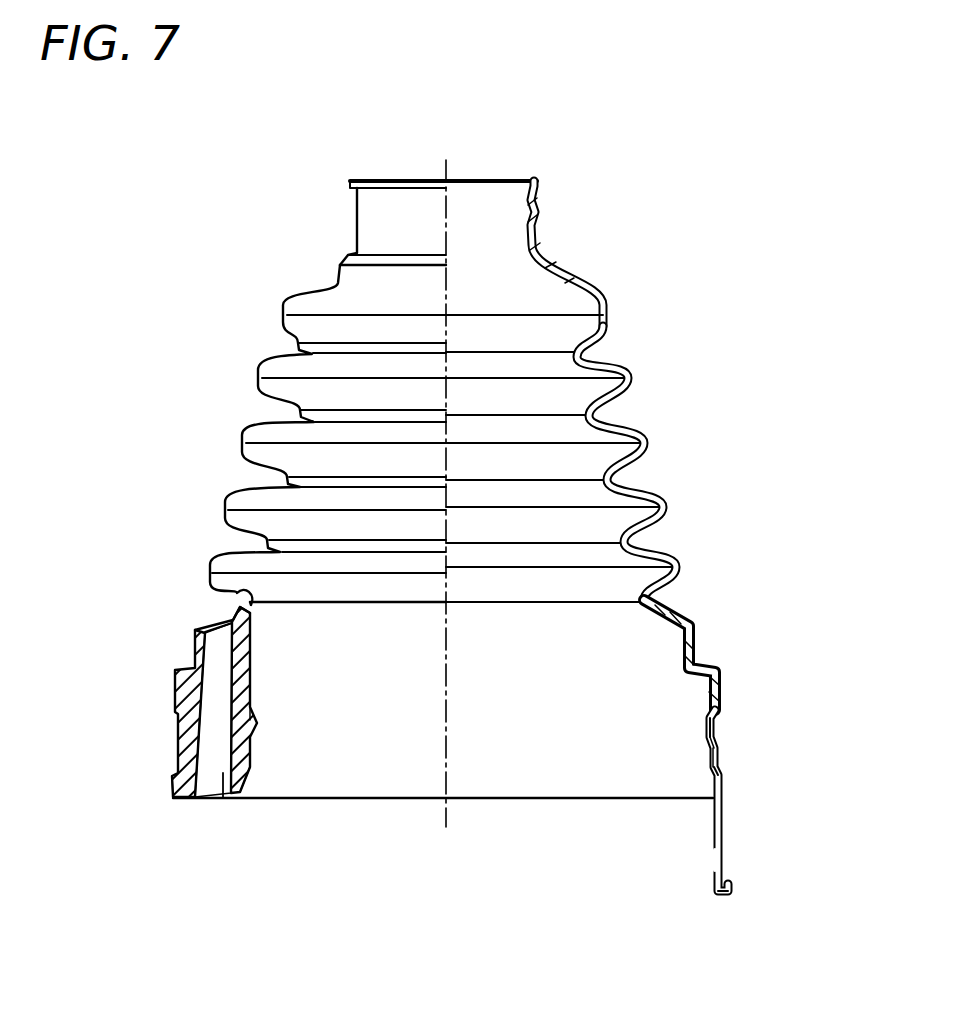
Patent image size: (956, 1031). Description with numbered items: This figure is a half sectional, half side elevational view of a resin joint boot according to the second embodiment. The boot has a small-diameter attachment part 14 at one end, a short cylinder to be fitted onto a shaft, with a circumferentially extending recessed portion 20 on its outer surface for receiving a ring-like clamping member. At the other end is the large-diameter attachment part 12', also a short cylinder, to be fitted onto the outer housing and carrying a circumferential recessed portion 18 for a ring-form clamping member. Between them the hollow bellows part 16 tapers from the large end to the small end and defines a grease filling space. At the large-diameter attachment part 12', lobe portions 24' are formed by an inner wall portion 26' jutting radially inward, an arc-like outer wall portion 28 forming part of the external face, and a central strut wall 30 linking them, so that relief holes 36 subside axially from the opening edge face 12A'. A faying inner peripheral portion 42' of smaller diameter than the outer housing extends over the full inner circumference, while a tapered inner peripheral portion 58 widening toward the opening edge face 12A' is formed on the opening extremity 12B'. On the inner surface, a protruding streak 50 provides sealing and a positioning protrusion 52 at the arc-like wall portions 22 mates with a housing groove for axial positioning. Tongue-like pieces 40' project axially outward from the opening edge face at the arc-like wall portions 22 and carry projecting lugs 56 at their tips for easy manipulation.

The small-diameter attachment part 14 is at (562, 206).
The recessed portion for fixation 20 is at (531, 232).
The bellows part 16 is at (662, 430).
The large-diameter attachment part 12' is at (745, 745).
The recessed portion for fixation 18 is at (712, 744).
The arc-like wall portion 22 is at (724, 779).
The tongue-like piece 40' is at (767, 859).
The projecting lug 56 is at (733, 892).
The protruding streak for sealing 50 is at (704, 757).
The positioning protrusion 52 is at (701, 739).
The lobe portion 24' is at (284, 697).
The arc-like outer wall portion 28 is at (180, 690).
The inner wall portion 26' is at (297, 700).
The faying inner peripheral portion 42' is at (313, 707).
The central strut wall 30 is at (213, 790).
The relief hole 36 is at (223, 797).
The tapered inner peripheral portion 58 is at (244, 778).
The opening extremity 12B' is at (116, 784).
The opening edge face 12A' is at (151, 844).